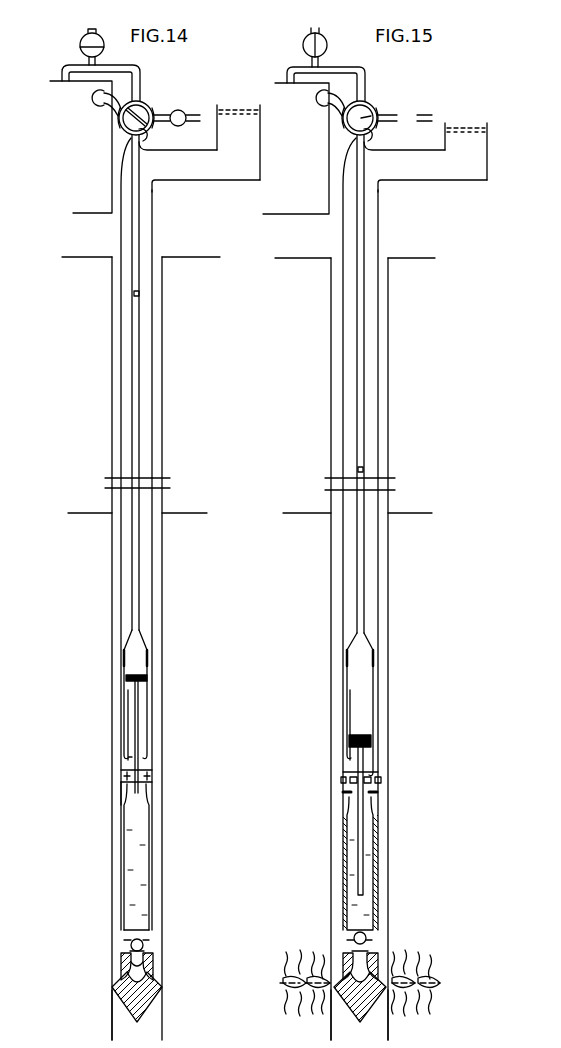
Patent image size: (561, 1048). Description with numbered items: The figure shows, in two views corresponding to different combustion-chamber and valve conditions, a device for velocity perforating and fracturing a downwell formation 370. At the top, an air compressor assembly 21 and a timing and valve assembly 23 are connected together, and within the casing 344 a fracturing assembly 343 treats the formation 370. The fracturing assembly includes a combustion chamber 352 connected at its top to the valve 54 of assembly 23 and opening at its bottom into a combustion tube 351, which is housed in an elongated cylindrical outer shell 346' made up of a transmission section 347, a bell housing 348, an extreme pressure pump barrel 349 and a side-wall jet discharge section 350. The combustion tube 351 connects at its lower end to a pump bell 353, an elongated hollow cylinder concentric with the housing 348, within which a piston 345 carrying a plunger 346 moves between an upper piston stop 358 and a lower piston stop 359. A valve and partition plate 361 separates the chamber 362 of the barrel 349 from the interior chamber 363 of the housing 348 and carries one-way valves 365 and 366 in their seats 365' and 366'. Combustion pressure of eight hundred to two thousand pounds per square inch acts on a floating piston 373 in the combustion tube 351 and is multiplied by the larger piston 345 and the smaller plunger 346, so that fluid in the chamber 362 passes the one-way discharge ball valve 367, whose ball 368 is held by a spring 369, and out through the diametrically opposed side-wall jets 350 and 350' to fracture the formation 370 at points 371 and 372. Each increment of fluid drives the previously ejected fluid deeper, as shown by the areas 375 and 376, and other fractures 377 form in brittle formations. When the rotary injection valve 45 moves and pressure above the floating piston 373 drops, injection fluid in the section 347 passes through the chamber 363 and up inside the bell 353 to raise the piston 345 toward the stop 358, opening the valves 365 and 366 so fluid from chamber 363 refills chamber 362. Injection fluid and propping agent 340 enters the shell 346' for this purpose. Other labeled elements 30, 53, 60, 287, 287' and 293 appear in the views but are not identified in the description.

In FIG. 14, the air compressor assembly 21 is at (97, 140).
In FIG. 15, the air compressor assembly 21 is at (313, 150).
In FIG. 14, the timing and valve assembly 23 is at (177, 80).
In FIG. 15, the timing and valve assembly 23 is at (410, 93).
In FIG. 14, the supply pipe 30 is at (68, 50).
In FIG. 15, the supply pipe 30 is at (288, 76).
In FIG. 14, the rotary injection valve 45 is at (105, 43).
In FIG. 15, the rotary injection valve 45 is at (328, 43).
In FIG. 14, the closed valve 53 is at (148, 109).
In FIG. 15, the valve 54 is at (366, 112).
In FIG. 14, the gauge 60 is at (170, 116).
In FIG. 14, the ground surface 287 is at (141, 242).
In FIG. 15, the ground surface 287' is at (355, 243).
In FIG. 14, the packer seal 293 is at (108, 512).
In FIG. 15, the packer seal 293 is at (323, 512).
In FIG. 14, the injection fluid and propping agent 340 is at (238, 142).
In FIG. 15, the injection fluid and propping agent 340 is at (466, 151).
In FIG. 14, the fracturing assembly 343 is at (170, 187).
In FIG. 15, the fracturing assembly 343 is at (455, 184).
In FIG. 14, the casing 344 is at (163, 352).
In FIG. 15, the casing 344 is at (389, 352).
In FIG. 14, the piston 345 is at (128, 680).
In FIG. 15, the piston 345 is at (350, 745).
In FIG. 14, the pump plunger 346 is at (166, 773).
In FIG. 15, the pump plunger 346 is at (332, 863).
In FIG. 14, the outer shell 346' is at (174, 334).
In FIG. 15, the outer shell 346' is at (407, 334).
In FIG. 14, the transmission section 347 is at (121, 390).
In FIG. 15, the transmission section 347 is at (343, 433).
In FIG. 14, the bell housing 348 is at (151, 678).
In FIG. 15, the bell housing 348 is at (347, 663).
In FIG. 14, the extreme pressure pump barrel 349 is at (155, 865).
In FIG. 14, the side-wall jet 350 is at (94, 966).
In FIG. 14, the side-wall jet 350' is at (182, 966).
In FIG. 14, the combustion tube 351 is at (140, 426).
In FIG. 15, the combustion tube 351 is at (360, 384).
In FIG. 14, the combustion chamber 352 is at (148, 137).
In FIG. 15, the combustion chamber 352 is at (376, 152).
In FIG. 14, the pump bell 353 is at (152, 722).
In FIG. 15, the pump bell 353 is at (345, 699).
In FIG. 14, the upper piston stop 358 is at (126, 652).
In FIG. 15, the upper piston stop 358 is at (372, 662).
In FIG. 15, the lower piston stop 359 is at (374, 767).
In FIG. 14, the valve and partition plate 361 is at (118, 790).
In FIG. 14, the chamber 362 is at (135, 882).
In FIG. 15, the chamber 362 is at (352, 900).
In FIG. 14, the interior chamber 363 is at (120, 726).
In FIG. 15, the interior chamber 363 is at (371, 715).
In FIG. 15, the one-way valve 365 is at (317, 794).
In FIG. 15, the valve seat 365' is at (320, 768).
In FIG. 15, the one-way valve 366 is at (403, 809).
In FIG. 15, the valve seat 366' is at (405, 790).
In FIG. 14, the one-way discharge ball valve 367 is at (148, 943).
In FIG. 14, the ball 368 is at (131, 945).
In FIG. 15, the ball 368 is at (370, 940).
In FIG. 15, the spring 369 is at (352, 955).
In FIG. 14, the formation 370 is at (162, 998).
In FIG. 15, the formation 370 is at (360, 997).
In FIG. 14, the contact point 371 is at (106, 988).
In FIG. 14, the contact point 372 is at (166, 982).
In FIG. 14, the floating piston 373 is at (140, 294).
In FIG. 15, the floating piston 373 is at (364, 469).
In FIG. 15, the fluid zone 375 is at (440, 985).
In FIG. 15, the fluid zone 376 is at (392, 1010).
In FIG. 15, the fracture 377 is at (326, 1018).